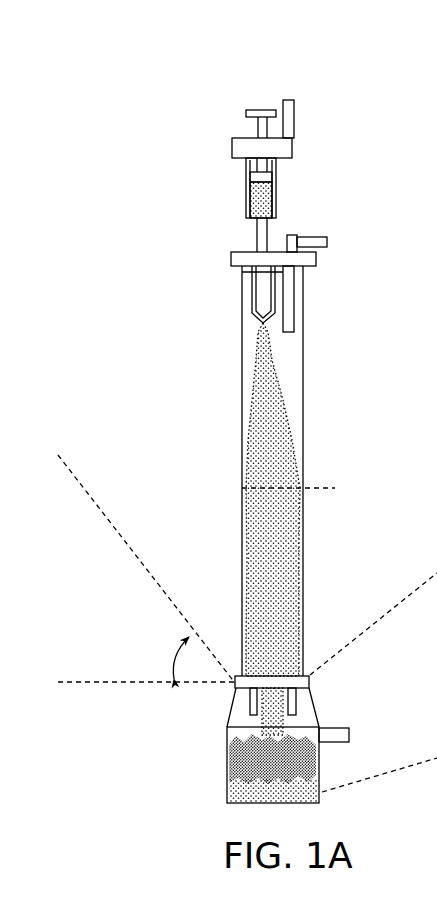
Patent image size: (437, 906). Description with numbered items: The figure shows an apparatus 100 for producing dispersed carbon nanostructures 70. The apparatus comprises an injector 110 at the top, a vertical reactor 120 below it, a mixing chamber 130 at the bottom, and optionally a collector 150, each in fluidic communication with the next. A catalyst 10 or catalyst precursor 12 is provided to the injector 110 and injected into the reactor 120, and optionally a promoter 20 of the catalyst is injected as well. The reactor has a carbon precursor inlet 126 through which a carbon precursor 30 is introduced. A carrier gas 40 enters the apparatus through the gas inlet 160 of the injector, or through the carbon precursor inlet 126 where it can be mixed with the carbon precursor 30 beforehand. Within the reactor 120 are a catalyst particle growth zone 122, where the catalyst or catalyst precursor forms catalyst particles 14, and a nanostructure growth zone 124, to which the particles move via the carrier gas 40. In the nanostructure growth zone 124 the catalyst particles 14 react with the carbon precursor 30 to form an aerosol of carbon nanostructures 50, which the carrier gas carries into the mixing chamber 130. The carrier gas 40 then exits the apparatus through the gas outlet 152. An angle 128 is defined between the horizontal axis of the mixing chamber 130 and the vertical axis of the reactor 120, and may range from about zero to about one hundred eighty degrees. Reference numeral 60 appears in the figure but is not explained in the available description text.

The apparatus 100 is at (113, 122).
The injector 110 is at (215, 178).
The gas inlet 160 is at (294, 108).
The catalyst 10 is at (275, 192).
The catalyst precursor 12 is at (275, 202).
The promoter 20 is at (275, 212).
The carbon precursor inlet 126 is at (312, 237).
The carbon precursor 30 is at (330, 243).
The carrier gas 40 is at (288, 99).
The reactor 120 is at (213, 424).
The catalyst particle growth zone 122 is at (319, 377).
The nanostructure growth zone 124 is at (319, 526).
The catalyst particles 14 is at (283, 453).
The aerosol of carbon nanostructures 50 is at (283, 610).
The angle 128 is at (178, 655).
The mixing chamber 130 is at (255, 737).
The gas outlet 152 is at (340, 730).
The dispersed carbon nanostructures 70 is at (237, 765).
The collector 150 is at (237, 793).
The collected product 60 is at (298, 790).